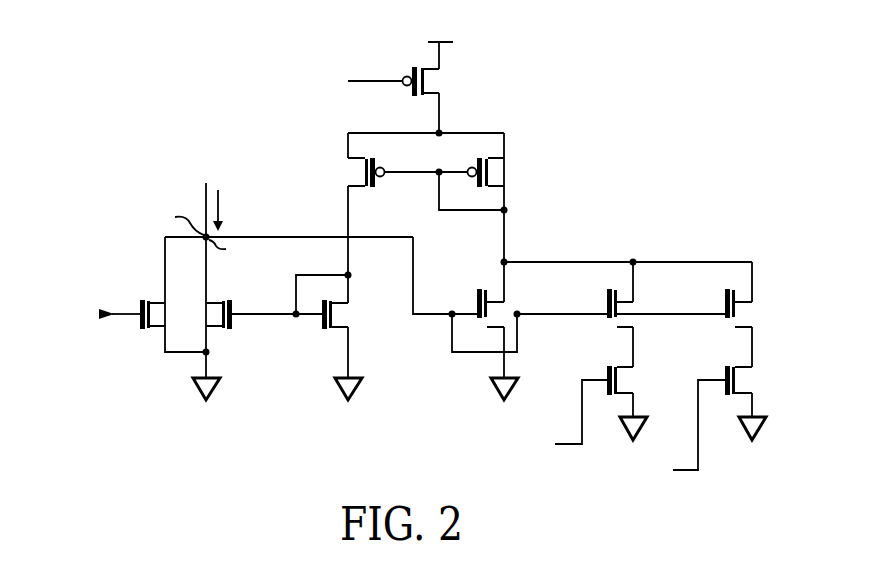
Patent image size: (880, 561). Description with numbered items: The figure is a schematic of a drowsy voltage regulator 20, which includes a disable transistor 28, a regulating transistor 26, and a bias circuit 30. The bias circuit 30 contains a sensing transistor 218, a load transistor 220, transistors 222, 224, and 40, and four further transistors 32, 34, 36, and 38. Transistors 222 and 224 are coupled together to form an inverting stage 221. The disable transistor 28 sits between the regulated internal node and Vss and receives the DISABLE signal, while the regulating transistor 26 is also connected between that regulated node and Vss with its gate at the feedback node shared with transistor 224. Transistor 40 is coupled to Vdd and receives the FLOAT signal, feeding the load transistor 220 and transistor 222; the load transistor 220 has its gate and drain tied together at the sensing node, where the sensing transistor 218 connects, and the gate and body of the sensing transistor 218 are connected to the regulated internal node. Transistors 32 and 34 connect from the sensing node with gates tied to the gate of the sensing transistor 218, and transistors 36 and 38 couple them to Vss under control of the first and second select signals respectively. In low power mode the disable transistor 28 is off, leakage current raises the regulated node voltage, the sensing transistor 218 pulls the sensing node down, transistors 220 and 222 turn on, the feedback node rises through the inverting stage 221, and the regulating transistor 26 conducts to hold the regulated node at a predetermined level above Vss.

The drowsy voltage regulator 20 is at (124, 66).
The bias circuit 30 is at (594, 132).
The transistor 40 is at (428, 81).
The transistor 222 is at (362, 172).
The load transistor 220 is at (491, 172).
The sensing transistor 218 is at (475, 302).
The inverting stage 221 is at (432, 381).
The disable transistor 28 is at (140, 302).
The regulating transistor 26 is at (233, 302).
The transistor 224 is at (335, 313).
The transistor 32 is at (605, 302).
The transistor 34 is at (721, 302).
The transistor 36 is at (620, 380).
The transistor 38 is at (739, 380).